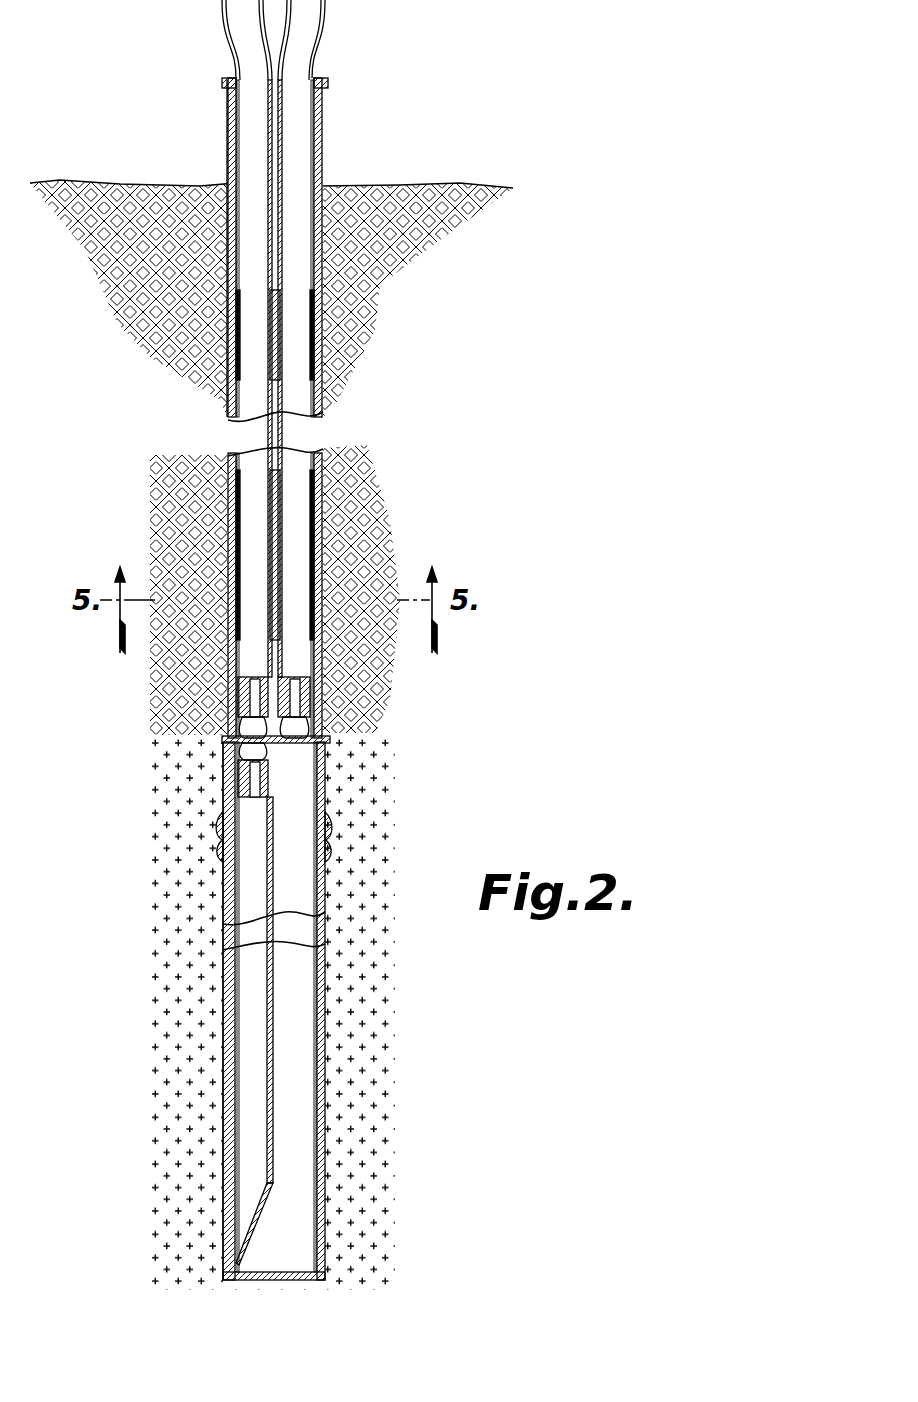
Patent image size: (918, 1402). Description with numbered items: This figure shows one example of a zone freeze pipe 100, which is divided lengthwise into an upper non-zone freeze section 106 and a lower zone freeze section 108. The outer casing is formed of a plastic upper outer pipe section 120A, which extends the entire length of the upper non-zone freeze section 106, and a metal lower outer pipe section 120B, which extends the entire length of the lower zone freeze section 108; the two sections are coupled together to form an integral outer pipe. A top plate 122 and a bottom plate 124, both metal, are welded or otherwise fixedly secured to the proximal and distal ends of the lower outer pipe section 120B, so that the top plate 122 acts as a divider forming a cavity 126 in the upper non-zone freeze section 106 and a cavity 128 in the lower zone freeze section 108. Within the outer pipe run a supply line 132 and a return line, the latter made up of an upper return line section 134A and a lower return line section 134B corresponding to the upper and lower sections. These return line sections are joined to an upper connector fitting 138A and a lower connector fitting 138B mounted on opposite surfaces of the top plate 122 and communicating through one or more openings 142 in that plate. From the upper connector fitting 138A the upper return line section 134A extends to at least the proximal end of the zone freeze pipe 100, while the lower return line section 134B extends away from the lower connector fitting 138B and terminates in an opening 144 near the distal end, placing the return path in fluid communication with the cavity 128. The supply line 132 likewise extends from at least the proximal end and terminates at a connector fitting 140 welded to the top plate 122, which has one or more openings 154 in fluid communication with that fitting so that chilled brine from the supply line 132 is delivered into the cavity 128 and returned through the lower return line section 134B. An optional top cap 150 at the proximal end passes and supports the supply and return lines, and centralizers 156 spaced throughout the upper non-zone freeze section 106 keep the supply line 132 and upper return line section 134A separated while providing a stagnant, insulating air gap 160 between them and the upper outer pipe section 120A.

The zone freeze pipe 100 is at (440, 88).
The upper non-zone freeze section 106 is at (218, 523).
The lower zone freeze section 108 is at (215, 888).
The upper outer pipe section 120A is at (234, 356).
The lower outer pipe section 120B is at (225, 1160).
The top plate 122 is at (296, 775).
The bottom plate 124 is at (320, 1285).
The cavity 126 is at (296, 722).
The cavity 128 is at (305, 1050).
The supply line 132 is at (314, 130).
The upper return line section 134A is at (234, 135).
The lower return line section 134B is at (236, 1075).
The upper connector fitting 138A is at (245, 685).
The lower connector fitting 138B is at (245, 780).
The connector fitting 140 is at (312, 684).
The openings 142 is at (262, 745).
The opening 144 is at (262, 1215).
The top cap 150 is at (322, 80).
The openings 154 is at (292, 745).
The centralizers 156 is at (314, 310).
The air gap 160 is at (278, 238).